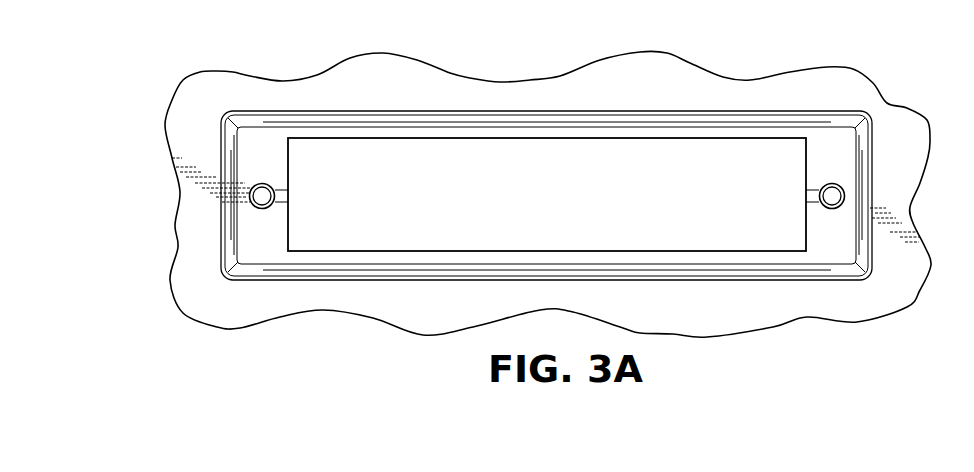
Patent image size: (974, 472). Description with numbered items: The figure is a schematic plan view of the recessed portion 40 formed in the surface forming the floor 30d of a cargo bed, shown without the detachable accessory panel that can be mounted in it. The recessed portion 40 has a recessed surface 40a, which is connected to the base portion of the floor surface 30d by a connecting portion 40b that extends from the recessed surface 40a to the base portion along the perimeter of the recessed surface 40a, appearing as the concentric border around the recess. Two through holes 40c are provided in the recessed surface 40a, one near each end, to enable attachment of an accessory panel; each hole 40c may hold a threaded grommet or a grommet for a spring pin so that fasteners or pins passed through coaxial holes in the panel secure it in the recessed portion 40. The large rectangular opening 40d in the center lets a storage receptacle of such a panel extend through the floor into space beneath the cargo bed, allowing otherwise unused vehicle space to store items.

The surface forming floor of the cargo bed 30d is at (221, 97).
The recessed portion 40 is at (529, 199).
The recessed surface 40a is at (257, 167).
The connecting portion 40b is at (228, 135).
The through holes 40c is at (248, 197).
The opening 40d is at (332, 255).